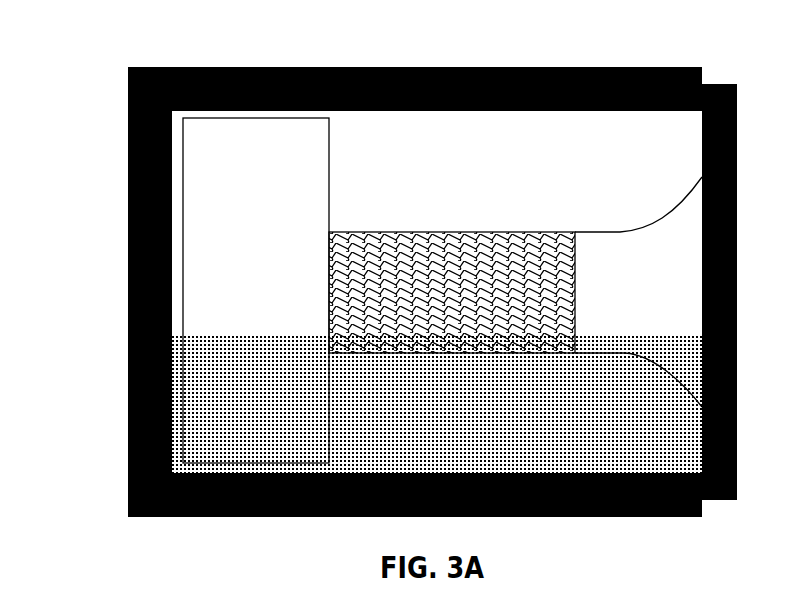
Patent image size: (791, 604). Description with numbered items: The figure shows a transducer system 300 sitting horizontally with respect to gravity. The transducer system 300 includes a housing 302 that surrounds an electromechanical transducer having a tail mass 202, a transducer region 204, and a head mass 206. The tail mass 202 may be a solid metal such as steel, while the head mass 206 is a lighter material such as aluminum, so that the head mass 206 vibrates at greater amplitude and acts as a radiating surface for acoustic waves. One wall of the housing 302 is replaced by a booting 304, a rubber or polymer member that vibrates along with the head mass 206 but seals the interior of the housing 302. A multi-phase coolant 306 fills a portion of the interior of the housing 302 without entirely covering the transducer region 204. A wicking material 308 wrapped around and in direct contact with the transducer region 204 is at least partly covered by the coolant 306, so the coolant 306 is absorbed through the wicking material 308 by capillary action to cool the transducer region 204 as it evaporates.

The transducer system 300 is at (76, 45).
The housing 302 is at (402, 67).
The booting 304 is at (720, 83).
The tail mass 202 is at (236, 299).
The transducer region 204 is at (545, 215).
The head mass 206 is at (615, 300).
The multi-phase coolant 306 is at (432, 431).
The wicking material 308 is at (441, 231).